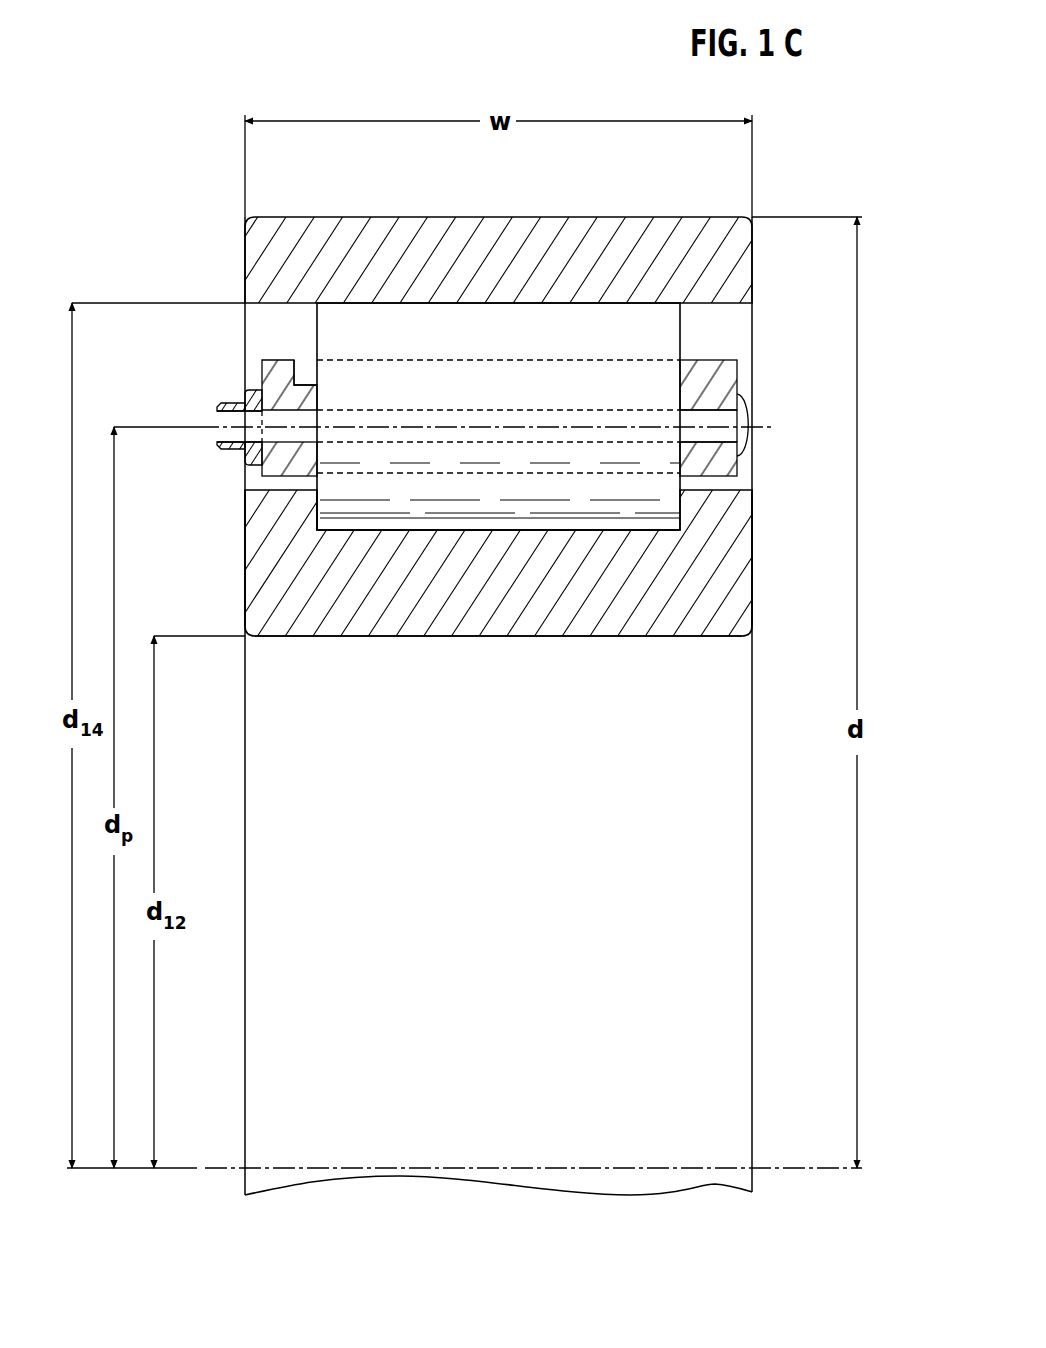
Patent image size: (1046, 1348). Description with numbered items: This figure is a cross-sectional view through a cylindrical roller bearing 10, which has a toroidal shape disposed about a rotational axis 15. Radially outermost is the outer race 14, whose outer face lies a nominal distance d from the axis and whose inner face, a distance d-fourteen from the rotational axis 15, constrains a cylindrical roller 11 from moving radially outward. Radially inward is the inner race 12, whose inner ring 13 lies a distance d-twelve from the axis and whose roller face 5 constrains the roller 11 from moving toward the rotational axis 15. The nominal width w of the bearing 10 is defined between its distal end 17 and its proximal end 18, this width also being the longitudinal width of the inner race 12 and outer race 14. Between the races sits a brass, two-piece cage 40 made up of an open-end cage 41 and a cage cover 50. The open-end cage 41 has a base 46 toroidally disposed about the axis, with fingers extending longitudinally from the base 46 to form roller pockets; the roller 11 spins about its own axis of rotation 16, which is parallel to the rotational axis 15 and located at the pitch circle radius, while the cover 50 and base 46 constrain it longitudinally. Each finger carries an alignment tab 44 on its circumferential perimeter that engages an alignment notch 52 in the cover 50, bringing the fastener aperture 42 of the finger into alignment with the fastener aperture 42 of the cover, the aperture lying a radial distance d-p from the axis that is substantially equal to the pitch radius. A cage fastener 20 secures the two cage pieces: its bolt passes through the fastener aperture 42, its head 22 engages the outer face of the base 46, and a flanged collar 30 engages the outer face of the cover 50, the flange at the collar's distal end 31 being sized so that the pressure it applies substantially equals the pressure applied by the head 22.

The cylindrical roller bearing 10 is at (180, 208).
The outer race 14 is at (705, 230).
The inner race 12 is at (460, 600).
The inner ring 13 is at (578, 637).
The cylindrical roller 11 is at (617, 507).
The distal end 17 is at (757, 550).
The proximal end 18 is at (245, 580).
The roller face 5 is at (357, 525).
The axis of rotation 16 is at (345, 428).
The cage fastener 20 is at (625, 415).
The fastener aperture 42 is at (395, 440).
The alignment notch 52 is at (270, 395).
The alignment tab 44 is at (305, 372).
The cage cover 50 is at (272, 470).
The cage 40 is at (252, 356).
The flanged collar 30 is at (222, 405).
The distal end 31 is at (215, 442).
The open-end cage 41 is at (712, 362).
The head 22 is at (748, 450).
The base 46 is at (680, 376).
The rotational axis 15 is at (597, 1166).